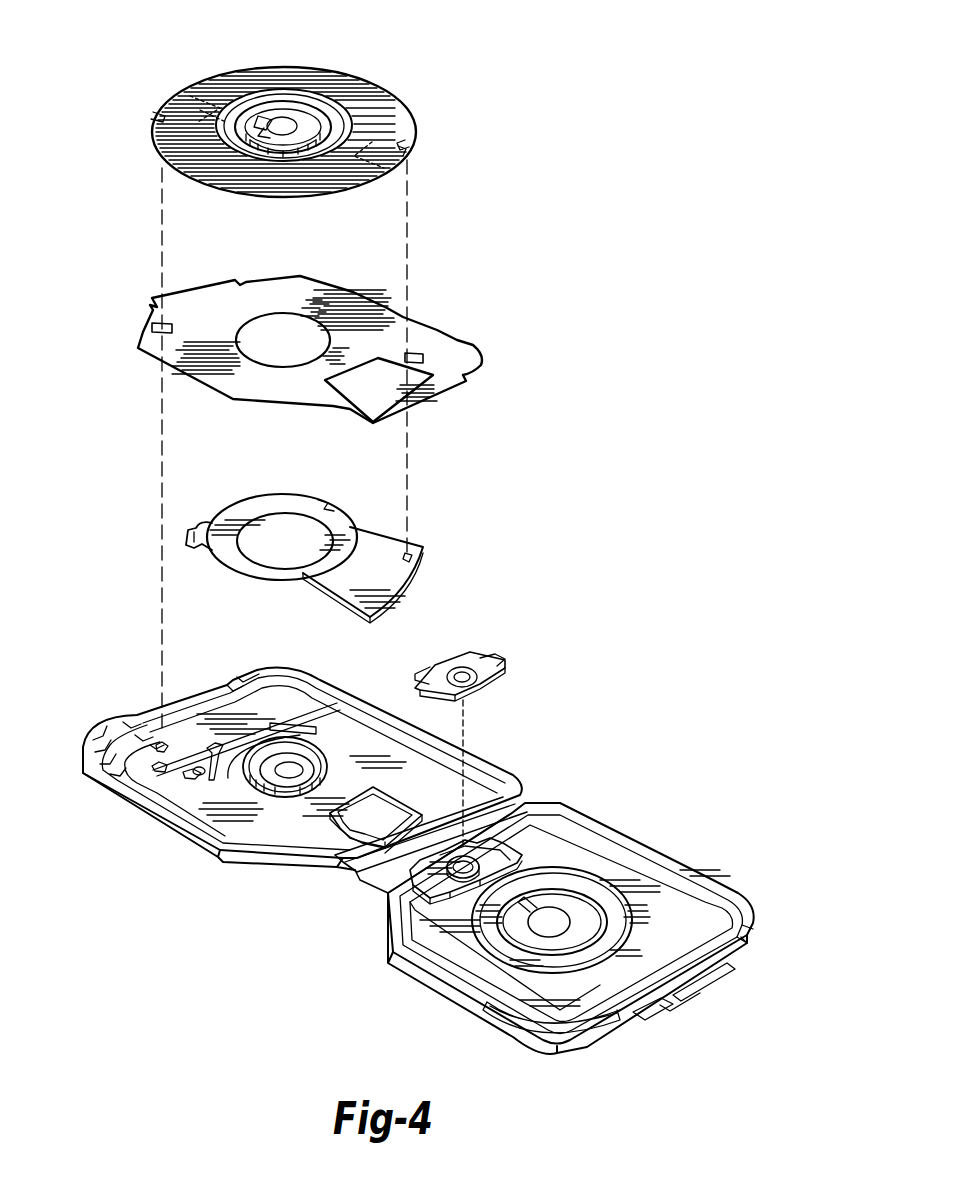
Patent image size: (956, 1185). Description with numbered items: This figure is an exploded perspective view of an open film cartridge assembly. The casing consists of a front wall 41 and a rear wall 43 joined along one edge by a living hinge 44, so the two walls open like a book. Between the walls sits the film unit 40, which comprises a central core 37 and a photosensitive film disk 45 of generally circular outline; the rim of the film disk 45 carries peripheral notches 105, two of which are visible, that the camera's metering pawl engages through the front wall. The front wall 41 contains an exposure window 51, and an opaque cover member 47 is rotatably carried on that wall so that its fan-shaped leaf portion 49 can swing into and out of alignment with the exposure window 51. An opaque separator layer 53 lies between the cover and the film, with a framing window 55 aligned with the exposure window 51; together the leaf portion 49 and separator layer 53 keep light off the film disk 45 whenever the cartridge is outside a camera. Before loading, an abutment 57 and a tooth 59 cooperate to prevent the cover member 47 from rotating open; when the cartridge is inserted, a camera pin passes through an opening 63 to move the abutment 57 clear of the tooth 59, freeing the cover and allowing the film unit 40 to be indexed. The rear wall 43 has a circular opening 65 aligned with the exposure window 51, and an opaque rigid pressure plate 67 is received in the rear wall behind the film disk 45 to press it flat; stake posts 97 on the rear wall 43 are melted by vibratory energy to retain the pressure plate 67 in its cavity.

The central core 37 is at (248, 118).
The film unit 40 is at (335, 52).
The film disk 45 is at (366, 104).
The peripheral notches 105 is at (410, 150).
The separator layer 53 is at (456, 345).
The framing window 55 is at (368, 382).
The cover member 47 is at (332, 520).
The fan-shaped leaf portion 49 is at (378, 581).
The abutment 57 is at (200, 528).
The pressure plate 67 is at (505, 673).
The front wall 41 is at (245, 863).
The rear wall 43 is at (416, 980).
The living hinge 44 is at (354, 880).
The exposure window 51 is at (381, 823).
The tooth 59 is at (162, 770).
The opening 63 is at (200, 780).
The circular opening 65 is at (521, 842).
The stake posts 97 is at (466, 852).